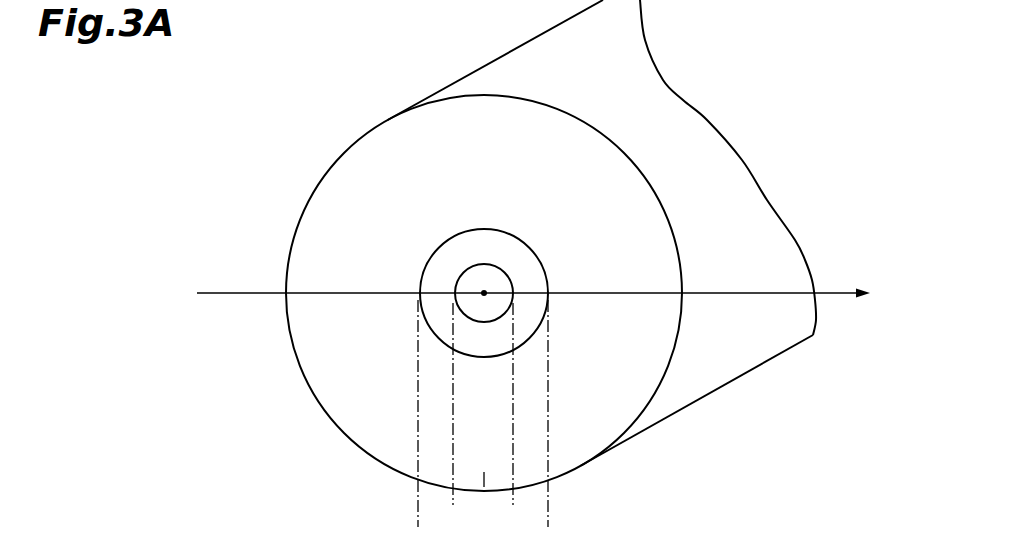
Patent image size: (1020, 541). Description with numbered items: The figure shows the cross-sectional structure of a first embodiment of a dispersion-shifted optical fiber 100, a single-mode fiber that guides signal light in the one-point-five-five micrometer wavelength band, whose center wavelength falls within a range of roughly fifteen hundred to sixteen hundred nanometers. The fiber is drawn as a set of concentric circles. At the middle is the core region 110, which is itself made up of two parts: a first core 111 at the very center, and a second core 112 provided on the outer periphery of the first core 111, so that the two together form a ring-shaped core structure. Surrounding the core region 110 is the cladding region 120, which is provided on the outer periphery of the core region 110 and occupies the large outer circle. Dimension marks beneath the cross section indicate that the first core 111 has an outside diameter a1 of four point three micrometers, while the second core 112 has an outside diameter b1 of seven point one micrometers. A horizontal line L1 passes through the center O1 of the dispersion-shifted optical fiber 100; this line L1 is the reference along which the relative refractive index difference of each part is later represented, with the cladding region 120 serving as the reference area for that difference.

The dispersion-shifted optical fiber 100 is at (758, 243).
The core region 110 is at (238, 170).
The first core 111 is at (472, 283).
The second core 112 is at (458, 257).
The cladding region 120 is at (578, 452).
The center O1 is at (484, 293).
The line L1 is at (549, 294).
The outside diameter of the first core a1 is at (513, 498).
The outside diameter of the second core b1 is at (548, 517).